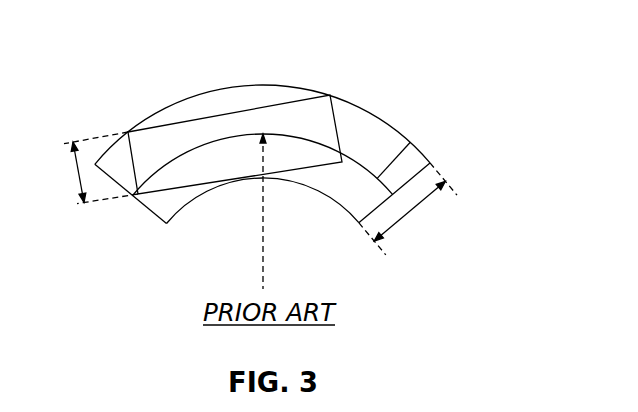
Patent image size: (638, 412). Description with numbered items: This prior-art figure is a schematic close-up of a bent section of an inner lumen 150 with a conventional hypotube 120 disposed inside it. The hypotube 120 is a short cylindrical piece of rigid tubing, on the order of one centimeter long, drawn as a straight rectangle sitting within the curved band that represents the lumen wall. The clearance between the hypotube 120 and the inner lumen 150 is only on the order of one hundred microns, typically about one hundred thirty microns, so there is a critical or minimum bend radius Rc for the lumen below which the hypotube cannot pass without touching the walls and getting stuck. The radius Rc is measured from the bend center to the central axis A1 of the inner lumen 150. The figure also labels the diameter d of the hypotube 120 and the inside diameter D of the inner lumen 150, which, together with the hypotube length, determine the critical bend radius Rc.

The conventional hypotube 120 is at (187, 121).
The inner lumen 150 is at (385, 124).
The central axis A1 is at (411, 146).
The diameter of the hypotube d is at (72, 175).
The inside diameter of inner lumen D is at (410, 212).
The critical bend radius Rc is at (264, 262).